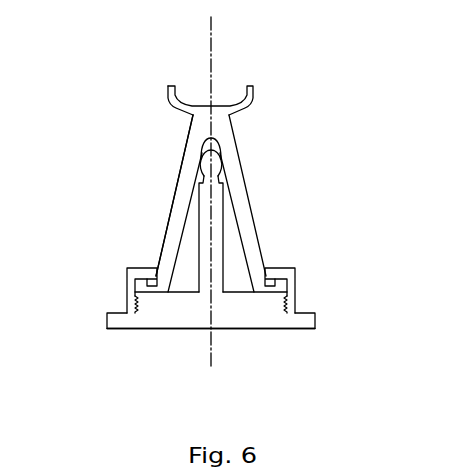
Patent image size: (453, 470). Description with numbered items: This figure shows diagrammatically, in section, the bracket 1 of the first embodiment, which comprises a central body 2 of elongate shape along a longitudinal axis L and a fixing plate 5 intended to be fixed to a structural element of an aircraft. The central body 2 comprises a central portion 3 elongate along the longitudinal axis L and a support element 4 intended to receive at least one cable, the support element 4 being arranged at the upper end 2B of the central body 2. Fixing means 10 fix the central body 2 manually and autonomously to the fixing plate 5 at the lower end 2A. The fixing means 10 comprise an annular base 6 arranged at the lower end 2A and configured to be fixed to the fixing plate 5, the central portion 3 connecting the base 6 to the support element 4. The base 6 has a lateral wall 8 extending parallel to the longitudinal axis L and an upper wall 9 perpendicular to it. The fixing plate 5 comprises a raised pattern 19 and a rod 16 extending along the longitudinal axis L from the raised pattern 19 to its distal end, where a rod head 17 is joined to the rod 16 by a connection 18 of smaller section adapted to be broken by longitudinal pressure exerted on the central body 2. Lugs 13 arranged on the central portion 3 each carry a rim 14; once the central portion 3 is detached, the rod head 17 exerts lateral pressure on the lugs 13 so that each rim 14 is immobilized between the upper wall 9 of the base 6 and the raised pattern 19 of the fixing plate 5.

The bracket 1 is at (76, 94).
The central body 2 is at (213, 203).
The lower end 2A is at (213, 331).
The upper end 2B is at (250, 111).
The central portion 3 is at (168, 249).
The support element 4 is at (182, 98).
The fixing plate 5 is at (125, 321).
The base 6 is at (128, 300).
The lateral wall 8 is at (297, 282).
The upper wall 9 is at (280, 272).
The fixing means 10 is at (118, 280).
The lugs 13 is at (184, 201).
The rim 14 is at (260, 297).
The rod 16 is at (218, 223).
The rod head 17 is at (219, 141).
The connection 18 is at (220, 168).
The raised pattern 19 is at (182, 298).
The longitudinal axis L is at (214, 37).